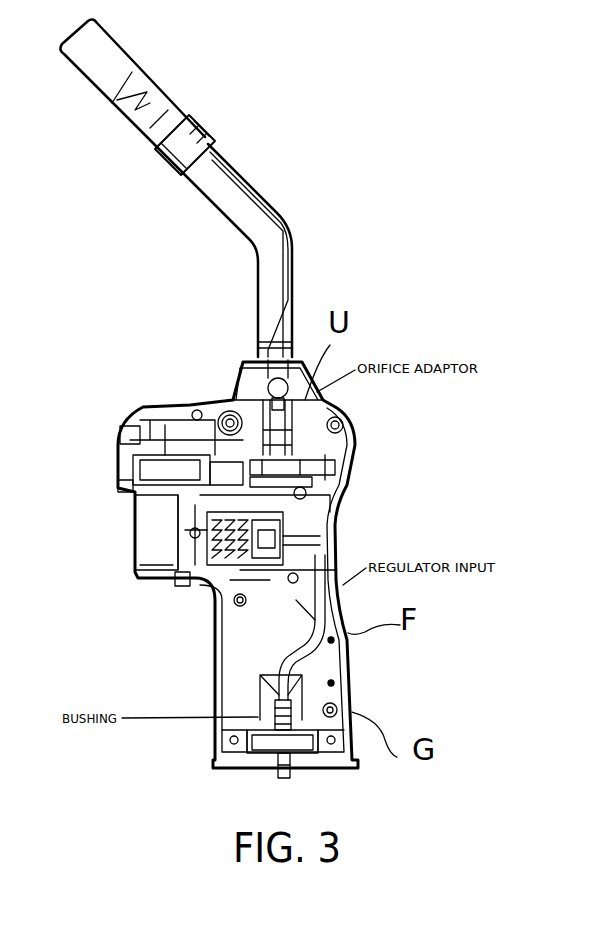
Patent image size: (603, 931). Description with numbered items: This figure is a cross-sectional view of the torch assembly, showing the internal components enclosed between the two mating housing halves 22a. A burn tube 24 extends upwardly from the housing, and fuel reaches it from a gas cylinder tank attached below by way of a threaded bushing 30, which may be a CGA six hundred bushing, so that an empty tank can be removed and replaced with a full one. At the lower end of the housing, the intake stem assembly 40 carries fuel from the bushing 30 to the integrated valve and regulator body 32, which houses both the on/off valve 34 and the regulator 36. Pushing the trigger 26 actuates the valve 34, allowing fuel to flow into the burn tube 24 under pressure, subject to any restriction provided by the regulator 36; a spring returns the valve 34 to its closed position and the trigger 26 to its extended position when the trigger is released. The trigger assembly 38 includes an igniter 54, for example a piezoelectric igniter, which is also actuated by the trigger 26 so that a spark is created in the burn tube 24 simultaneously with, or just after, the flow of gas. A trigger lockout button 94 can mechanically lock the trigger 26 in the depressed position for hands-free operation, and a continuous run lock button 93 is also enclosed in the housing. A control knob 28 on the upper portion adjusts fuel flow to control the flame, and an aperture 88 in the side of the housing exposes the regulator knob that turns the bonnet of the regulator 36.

The burn tube 24 is at (242, 255).
The housing halves 22a is at (310, 661).
The igniter 54 is at (190, 467).
The control knob 28 is at (220, 465).
The continuous run lock button 93 is at (123, 430).
The aperture 88 is at (120, 485).
The trigger assembly 38 is at (117, 510).
The trigger 26 is at (153, 542).
The trigger lockout button 94 is at (176, 584).
The on/off valve 34 is at (343, 457).
The integrated valve and regulator body 32 is at (311, 482).
The regulator 36 is at (340, 517).
The intake stem assembly 40 is at (262, 687).
The threaded bushing 30 is at (308, 748).